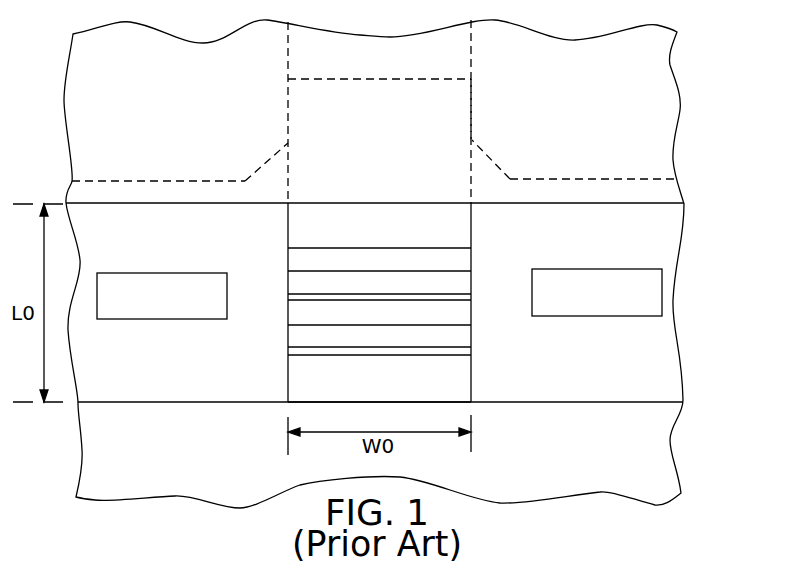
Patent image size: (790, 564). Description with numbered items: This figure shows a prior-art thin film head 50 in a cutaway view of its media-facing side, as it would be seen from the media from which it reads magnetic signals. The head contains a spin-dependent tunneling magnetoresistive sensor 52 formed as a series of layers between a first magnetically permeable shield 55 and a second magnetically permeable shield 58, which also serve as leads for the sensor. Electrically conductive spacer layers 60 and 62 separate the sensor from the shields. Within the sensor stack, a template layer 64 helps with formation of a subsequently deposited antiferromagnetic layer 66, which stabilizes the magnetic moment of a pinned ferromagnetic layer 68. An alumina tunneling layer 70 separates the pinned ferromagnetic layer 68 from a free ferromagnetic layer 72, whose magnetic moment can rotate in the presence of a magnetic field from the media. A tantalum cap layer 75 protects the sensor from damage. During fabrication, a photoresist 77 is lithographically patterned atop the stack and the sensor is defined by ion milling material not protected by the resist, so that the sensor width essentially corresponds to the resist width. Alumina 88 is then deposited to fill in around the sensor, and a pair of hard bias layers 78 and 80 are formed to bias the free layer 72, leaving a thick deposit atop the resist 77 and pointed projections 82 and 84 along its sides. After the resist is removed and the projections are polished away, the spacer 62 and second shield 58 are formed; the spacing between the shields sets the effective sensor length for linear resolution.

The thin film head 50 is at (693, 459).
The spin-dependent tunneling magnetoresistive sensor 52 is at (251, 364).
The first magnetically permeable shield 55 is at (138, 447).
The second magnetically permeable shield 58 is at (120, 146).
The spacer layer 60 is at (366, 390).
The spacer layer 62 is at (366, 236).
The template layer 64 is at (455, 352).
The antiferromagnetic layer 66 is at (455, 336).
The pinned ferromagnetic layer 68 is at (455, 313).
The alumina tunneling layer 70 is at (303, 298).
The free ferromagnetic layer 72 is at (455, 284).
The cap layer 75 is at (303, 258).
The photoresist 77 is at (472, 110).
The hard bias layer 78 is at (152, 308).
The hard bias layer 80 is at (580, 304).
The pointed projection 82 is at (270, 157).
The pointed projection 84 is at (468, 152).
The alumina 88 is at (366, 69).